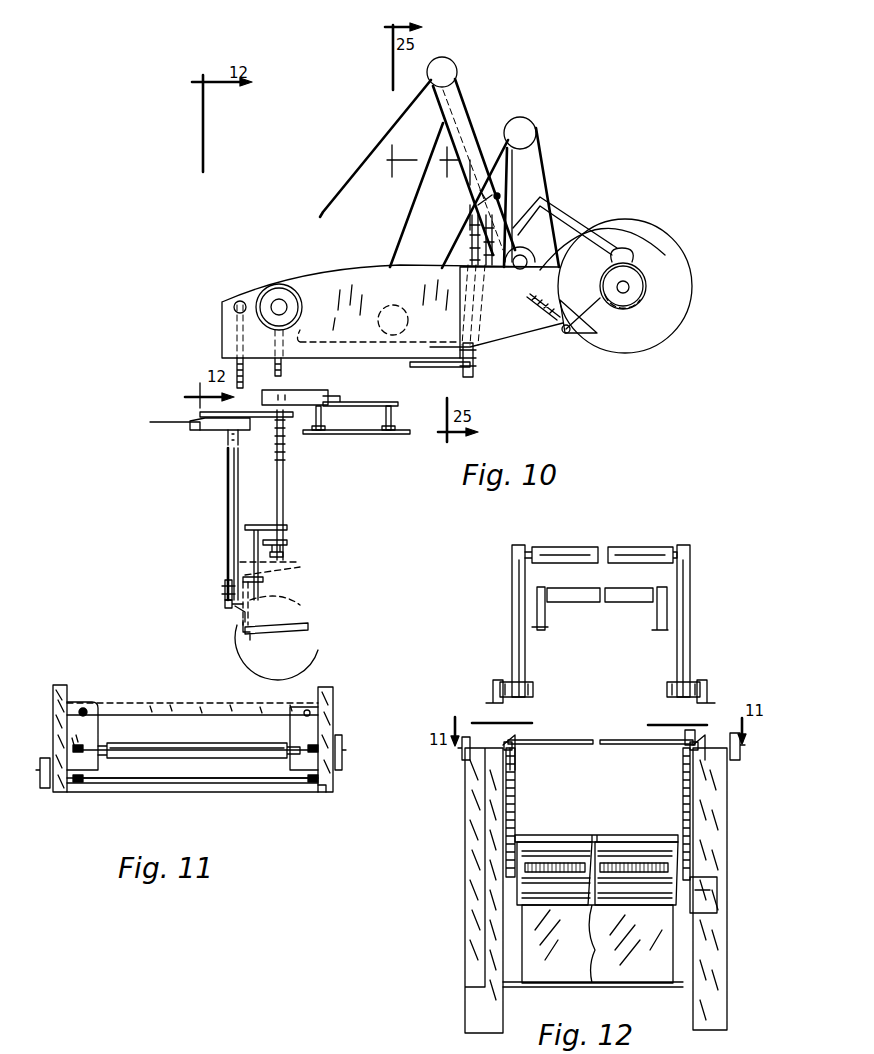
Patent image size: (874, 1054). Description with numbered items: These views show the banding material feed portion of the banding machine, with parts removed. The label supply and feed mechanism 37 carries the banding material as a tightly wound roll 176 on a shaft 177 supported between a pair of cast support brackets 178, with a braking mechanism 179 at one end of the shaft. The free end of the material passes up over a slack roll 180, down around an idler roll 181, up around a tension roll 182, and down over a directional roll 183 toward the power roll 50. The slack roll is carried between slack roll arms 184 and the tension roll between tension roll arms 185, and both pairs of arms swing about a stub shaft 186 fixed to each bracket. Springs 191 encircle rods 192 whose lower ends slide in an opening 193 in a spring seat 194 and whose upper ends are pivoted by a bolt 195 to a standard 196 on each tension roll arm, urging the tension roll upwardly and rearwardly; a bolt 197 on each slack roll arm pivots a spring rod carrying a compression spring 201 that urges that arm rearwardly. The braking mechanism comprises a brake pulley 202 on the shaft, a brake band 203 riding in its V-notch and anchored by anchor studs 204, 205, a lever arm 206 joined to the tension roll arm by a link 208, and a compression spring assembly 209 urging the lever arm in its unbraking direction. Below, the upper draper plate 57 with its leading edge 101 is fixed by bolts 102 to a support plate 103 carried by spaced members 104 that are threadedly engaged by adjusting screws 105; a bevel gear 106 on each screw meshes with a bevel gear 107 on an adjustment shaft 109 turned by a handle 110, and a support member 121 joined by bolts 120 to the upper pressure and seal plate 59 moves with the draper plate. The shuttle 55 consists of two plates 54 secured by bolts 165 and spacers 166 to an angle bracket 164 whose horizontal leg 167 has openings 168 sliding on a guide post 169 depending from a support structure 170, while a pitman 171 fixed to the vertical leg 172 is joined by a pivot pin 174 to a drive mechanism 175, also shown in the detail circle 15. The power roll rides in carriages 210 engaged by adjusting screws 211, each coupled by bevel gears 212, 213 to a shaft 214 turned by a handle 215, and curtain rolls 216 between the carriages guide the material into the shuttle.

In FIG. 10, the detail circle 15 is at (258, 668).
In FIG. 10, the label supply and feed mechanism 37 is at (582, 178).
In FIG. 12, the power roll 50 is at (567, 878).
In FIG. 10, the plates 54 is at (225, 498).
In FIG. 10, the shuttle 55 is at (222, 480).
In FIG. 10, the upper draper plate 57 is at (226, 432).
In FIG. 10, the upper pressure and seal plate 59 is at (355, 435).
In FIG. 10, the leading edge 101 is at (188, 428).
In FIG. 10, the bolts 102 is at (192, 422).
In FIG. 10, the support plate 103 is at (200, 413).
In FIG. 10, the spaced members 104 is at (330, 397).
In FIG. 10, the adjusting screws 105 is at (287, 388).
In FIG. 12, the adjusting screws 105 is at (682, 800).
In FIG. 11, the bevel gear 106 is at (75, 745).
In FIG. 12, the bevel gear 106 is at (684, 752).
In FIG. 11, the bevel gear 107 is at (72, 748).
In FIG. 12, the bevel gear 107 is at (700, 725).
In FIG. 10, the adjustment shaft 109 is at (287, 298).
In FIG. 11, the adjustment shaft 109 is at (88, 745).
In FIG. 12, the adjustment shaft 109 is at (625, 740).
In FIG. 10, the handle 110 is at (282, 300).
In FIG. 11, the handle 110 is at (343, 760).
In FIG. 12, the handle 110 is at (741, 740).
In FIG. 10, the bolts 120 is at (393, 425).
In FIG. 10, the support member 121 is at (393, 407).
In FIG. 10, the angle bracket 164 is at (264, 579).
In FIG. 10, the bolts 165 is at (224, 588).
In FIG. 10, the spacers 166 is at (228, 608).
In FIG. 10, the horizontal leg 167 is at (264, 582).
In FIG. 10, the openings 168 is at (282, 563).
In FIG. 10, the guide post 169 is at (288, 545).
In FIG. 10, the support structure 170 is at (287, 525).
In FIG. 10, the pitman 171 is at (243, 618).
In FIG. 10, the vertical leg 172 is at (238, 608).
In FIG. 10, the pivot pin 174 is at (245, 636).
In FIG. 10, the drive mechanism 175 is at (690, 238).
In FIG. 10, the roll 176 is at (690, 252).
In FIG. 10, the shaft 177 is at (632, 287).
In FIG. 10, the support brackets 178 is at (525, 332).
In FIG. 12, the support brackets 178 is at (492, 700).
In FIG. 10, the braking mechanism 179 is at (325, 212).
In FIG. 10, the slack roll 180 is at (532, 130).
In FIG. 12, the slack roll 180 is at (575, 603).
In FIG. 10, the idler roll 181 is at (380, 323).
In FIG. 10, the tension roll 182 is at (452, 66).
In FIG. 12, the tension roll 182 is at (640, 552).
In FIG. 10, the directional roll 183 is at (240, 300).
In FIG. 10, the slack roll arms 184 is at (538, 162).
In FIG. 10, the tension roll arms 185 is at (473, 105).
In FIG. 12, the tension roll arms 185 is at (511, 612).
In FIG. 10, the stub shaft 186 is at (598, 218).
In FIG. 12, the stub shaft 186 is at (508, 682).
In FIG. 10, the springs 191 is at (484, 255).
In FIG. 10, the rod 192 is at (470, 228).
In FIG. 10, the opening 193 is at (470, 377).
In FIG. 10, the spring seat 194 is at (444, 368).
In FIG. 10, the bolt 195 is at (478, 205).
In FIG. 10, the standard 196 is at (466, 175).
In FIG. 10, the bolt 197 is at (503, 215).
In FIG. 10, the compression spring 201 is at (480, 318).
In FIG. 10, the brake pulley 202 is at (642, 302).
In FIG. 10, the brake band 203 is at (620, 252).
In FIG. 10, the anchor stud 204 is at (647, 258).
In FIG. 10, the anchor stud 205 is at (578, 303).
In FIG. 10, the lever arm 206 is at (572, 333).
In FIG. 10, the link 208 is at (552, 213).
In FIG. 10, the compression spring assembly 209 is at (543, 297).
In FIG. 12, the carriages 210 is at (690, 868).
In FIG. 12, the adjusting screw 211 is at (470, 778).
In FIG. 11, the bevel gear 212 is at (80, 786).
In FIG. 12, the bevel gear 212 is at (513, 749).
In FIG. 11, the bevel gear 213 is at (320, 792).
In FIG. 12, the bevel gear 213 is at (518, 741).
In FIG. 11, the shaft 214 is at (250, 790).
In FIG. 12, the shaft 214 is at (478, 738).
In FIG. 11, the handle 215 is at (42, 790).
In FIG. 12, the handle 215 is at (460, 758).
In FIG. 12, the curtain rolls 216 is at (632, 905).